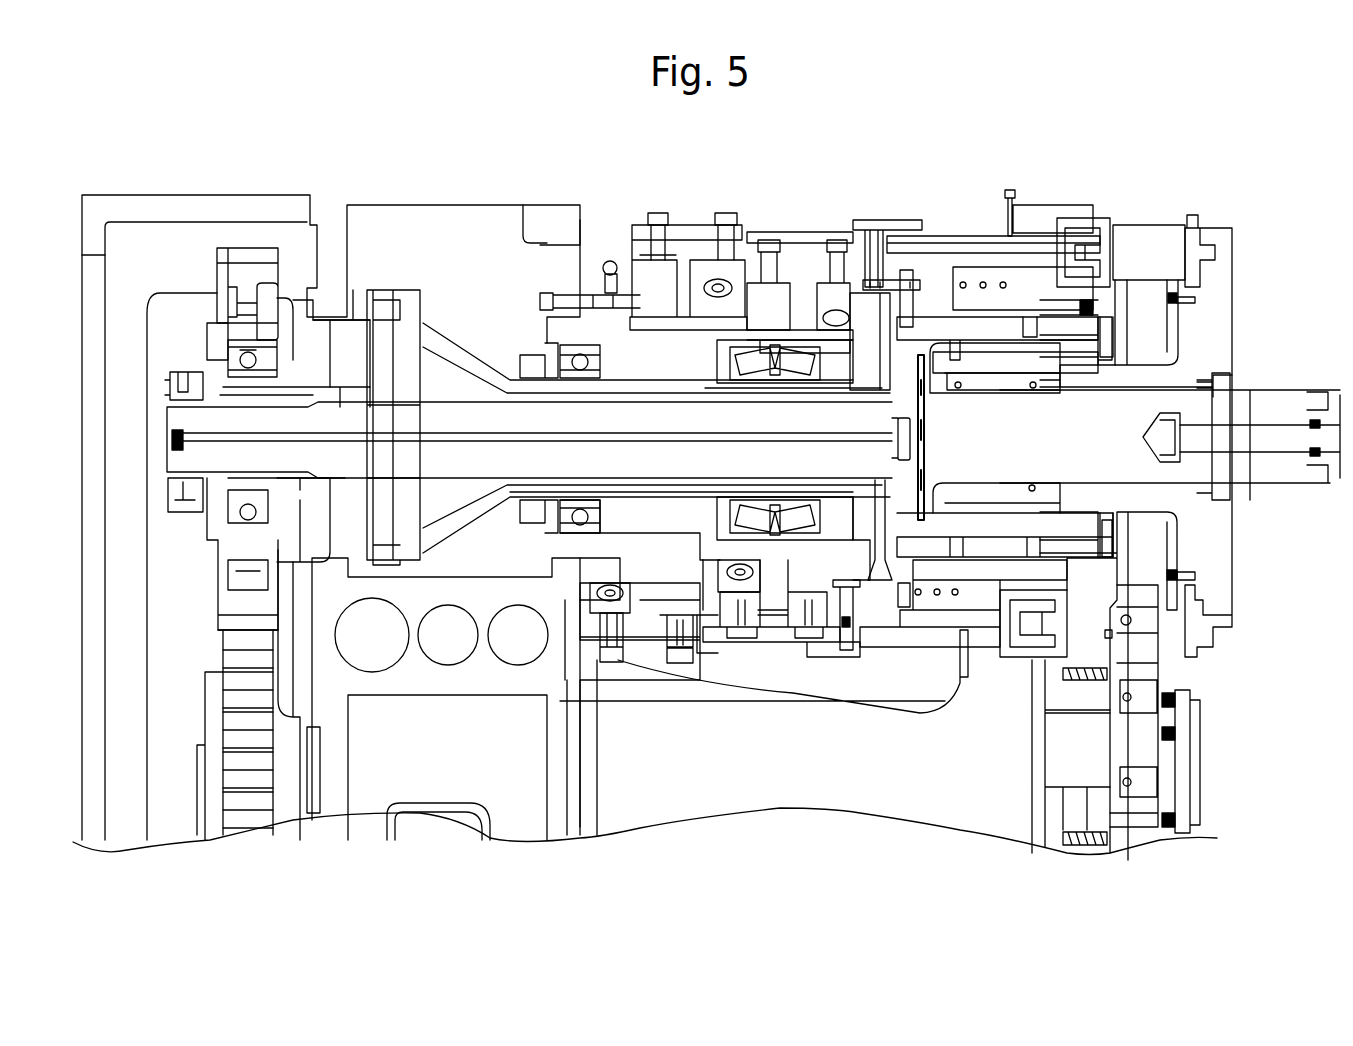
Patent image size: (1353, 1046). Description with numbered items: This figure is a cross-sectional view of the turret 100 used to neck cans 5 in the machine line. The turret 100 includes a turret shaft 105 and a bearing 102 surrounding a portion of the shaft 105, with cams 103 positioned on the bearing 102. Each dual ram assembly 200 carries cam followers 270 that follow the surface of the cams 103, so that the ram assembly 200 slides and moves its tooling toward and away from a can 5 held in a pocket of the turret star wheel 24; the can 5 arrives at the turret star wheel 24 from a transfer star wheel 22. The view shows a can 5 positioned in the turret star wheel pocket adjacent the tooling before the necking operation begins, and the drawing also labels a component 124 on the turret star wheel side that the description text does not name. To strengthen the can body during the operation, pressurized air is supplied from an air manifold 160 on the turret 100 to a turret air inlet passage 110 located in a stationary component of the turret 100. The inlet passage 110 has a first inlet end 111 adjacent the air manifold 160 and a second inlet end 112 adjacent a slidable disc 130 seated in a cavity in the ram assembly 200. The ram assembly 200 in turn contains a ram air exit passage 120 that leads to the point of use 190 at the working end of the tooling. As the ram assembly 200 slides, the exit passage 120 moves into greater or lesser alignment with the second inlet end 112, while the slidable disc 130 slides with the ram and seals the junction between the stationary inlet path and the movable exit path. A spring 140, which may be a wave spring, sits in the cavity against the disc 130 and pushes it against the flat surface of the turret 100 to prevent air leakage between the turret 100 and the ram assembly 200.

The can 5 is at (1140, 228).
The transfer star wheel 22 is at (1140, 743).
The turret star wheel 24 is at (1190, 208).
The turret 100 is at (852, 312).
The bearing 102 is at (682, 345).
The cams 103 is at (648, 617).
The turret shaft 105 is at (328, 422).
The turret air inlet passage 110 is at (483, 370).
The first inlet end 111 is at (437, 322).
The second inlet end 112 is at (920, 350).
The ram air exit passage 120 is at (950, 250).
The output shaft 124 is at (1283, 395).
The slidable disc 130 is at (923, 285).
The spring 140 is at (877, 300).
The air manifold 160 is at (305, 252).
The point of use 190 is at (1093, 250).
The dual ram assembly 200 is at (1028, 210).
The cam followers 270 is at (610, 590).